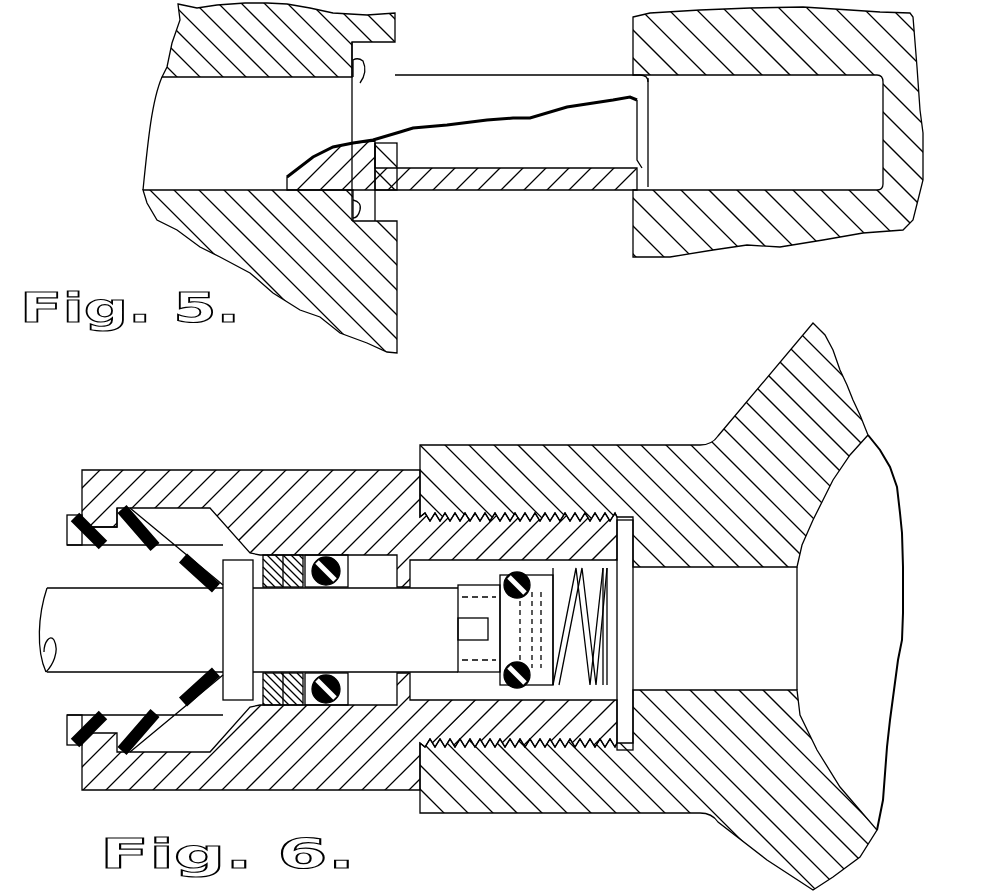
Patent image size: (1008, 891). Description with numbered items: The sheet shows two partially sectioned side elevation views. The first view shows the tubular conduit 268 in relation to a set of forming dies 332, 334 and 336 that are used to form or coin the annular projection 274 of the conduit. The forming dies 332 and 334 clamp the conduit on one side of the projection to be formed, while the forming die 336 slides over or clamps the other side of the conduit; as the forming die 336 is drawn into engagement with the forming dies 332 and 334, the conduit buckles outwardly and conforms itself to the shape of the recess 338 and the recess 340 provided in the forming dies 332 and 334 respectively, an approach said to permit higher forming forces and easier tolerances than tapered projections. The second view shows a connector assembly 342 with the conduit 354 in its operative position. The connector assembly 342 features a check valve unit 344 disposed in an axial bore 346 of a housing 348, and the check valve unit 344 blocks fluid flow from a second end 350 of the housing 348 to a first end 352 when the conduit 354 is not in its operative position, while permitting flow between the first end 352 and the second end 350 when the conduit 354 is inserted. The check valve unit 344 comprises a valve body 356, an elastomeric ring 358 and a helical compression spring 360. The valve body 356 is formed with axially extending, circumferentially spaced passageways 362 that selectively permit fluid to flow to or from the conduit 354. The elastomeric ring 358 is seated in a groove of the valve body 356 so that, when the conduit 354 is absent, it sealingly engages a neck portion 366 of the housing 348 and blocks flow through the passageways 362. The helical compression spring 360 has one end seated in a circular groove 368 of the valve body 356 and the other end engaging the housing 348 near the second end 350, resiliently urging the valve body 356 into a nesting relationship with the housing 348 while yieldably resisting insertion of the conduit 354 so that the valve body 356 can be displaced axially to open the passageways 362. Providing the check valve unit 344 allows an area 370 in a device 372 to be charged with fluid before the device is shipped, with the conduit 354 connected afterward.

In FIG. 5, the forming die 332 is at (205, 42).
In FIG. 5, the forming die 334 is at (180, 210).
In FIG. 5, the forming die 336 is at (695, 242).
In FIG. 5, the recess 338 is at (360, 83).
In FIG. 5, the recess 340 is at (345, 214).
In FIG. 5, the annular projection 274 is at (380, 80).
In FIG. 5, the tubular conduit 268 is at (517, 90).
In FIG. 6, the connector assembly 342 is at (266, 452).
In FIG. 6, the check valve unit 344 is at (470, 575).
In FIG. 6, the axial bore 346 is at (462, 690).
In FIG. 6, the housing 348 is at (298, 778).
In FIG. 6, the second end 350 is at (603, 537).
In FIG. 6, the first end 352 is at (90, 487).
In FIG. 6, the conduit 354 is at (87, 657).
In FIG. 6, the valve body 356 is at (507, 640).
In FIG. 6, the elastomeric ring 358 is at (520, 570).
In FIG. 6, the helical compression spring 360 is at (588, 680).
In FIG. 6, the passageways 362 is at (467, 630).
In FIG. 6, the neck portion 366 is at (368, 577).
In FIG. 6, the circular groove 368 is at (628, 613).
In FIG. 6, the area 370 is at (872, 632).
In FIG. 6, the device 372 is at (830, 463).